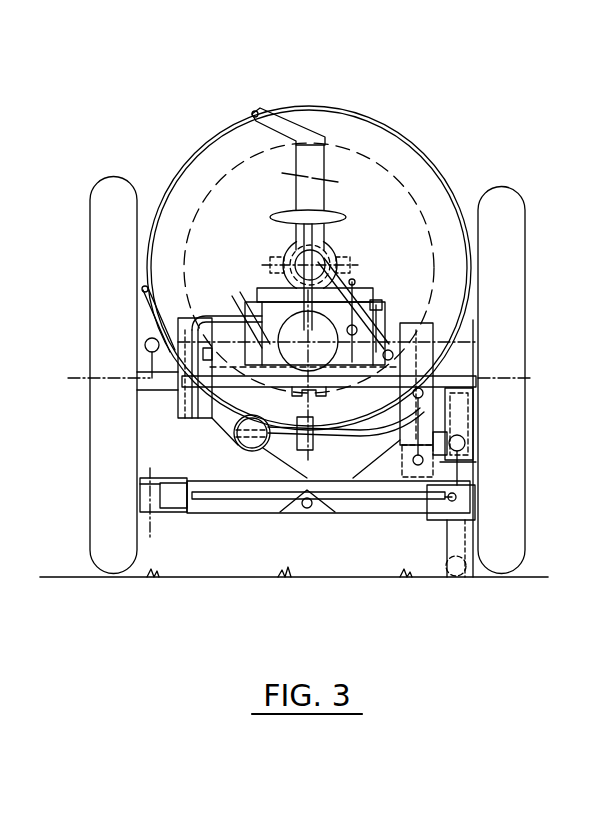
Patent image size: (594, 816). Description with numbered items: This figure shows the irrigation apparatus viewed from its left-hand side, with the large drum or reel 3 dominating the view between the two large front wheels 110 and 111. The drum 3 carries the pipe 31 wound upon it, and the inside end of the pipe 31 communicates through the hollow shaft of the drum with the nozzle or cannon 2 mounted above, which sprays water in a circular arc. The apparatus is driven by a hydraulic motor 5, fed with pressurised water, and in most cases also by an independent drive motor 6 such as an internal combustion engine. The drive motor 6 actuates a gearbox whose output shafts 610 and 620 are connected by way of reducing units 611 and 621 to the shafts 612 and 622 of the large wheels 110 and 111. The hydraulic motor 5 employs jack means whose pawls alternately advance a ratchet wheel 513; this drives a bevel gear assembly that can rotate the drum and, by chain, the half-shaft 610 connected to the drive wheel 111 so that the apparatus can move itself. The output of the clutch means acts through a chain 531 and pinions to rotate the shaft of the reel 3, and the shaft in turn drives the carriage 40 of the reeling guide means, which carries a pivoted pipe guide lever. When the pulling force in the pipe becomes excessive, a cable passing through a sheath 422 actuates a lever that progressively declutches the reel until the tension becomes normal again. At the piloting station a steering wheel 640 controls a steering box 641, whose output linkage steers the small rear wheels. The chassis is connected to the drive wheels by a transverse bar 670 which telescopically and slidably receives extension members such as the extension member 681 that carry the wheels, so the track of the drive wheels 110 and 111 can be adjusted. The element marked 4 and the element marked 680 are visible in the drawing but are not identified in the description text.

The nozzle 2 is at (280, 122).
The drum 3 is at (367, 104).
The hydraulic cylinder 4 is at (466, 432).
The hydraulic motor 5 is at (237, 487).
The drive motor 6 is at (330, 340).
The pipe 31 is at (462, 572).
The carriage 40 is at (476, 462).
The large wheel 110 is at (118, 196).
The large wheel 111 is at (517, 200).
The sheath 422 is at (313, 437).
The ratchet wheel 513 is at (256, 306).
The chain 531 is at (354, 284).
The output shaft 610 is at (400, 372).
The reducing unit 611 is at (420, 372).
The shaft 612 is at (470, 381).
The output shaft 620 is at (181, 393).
The reducing unit 621 is at (140, 392).
The shaft 622 is at (135, 368).
The steering wheel 640 is at (272, 214).
The steering box 641 is at (293, 450).
The transverse bar 670 is at (355, 513).
The right foot 680 is at (440, 512).
The extension member 681 is at (167, 505).